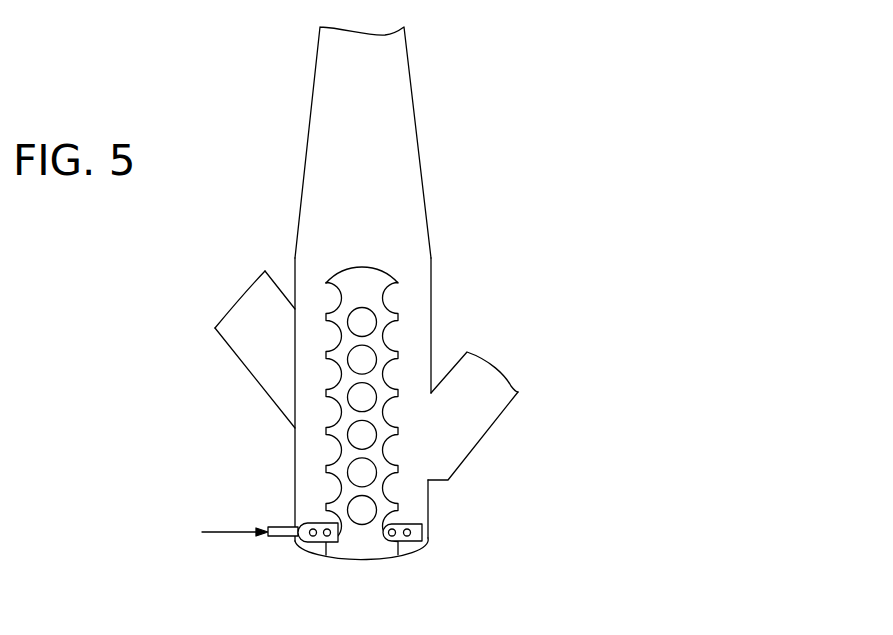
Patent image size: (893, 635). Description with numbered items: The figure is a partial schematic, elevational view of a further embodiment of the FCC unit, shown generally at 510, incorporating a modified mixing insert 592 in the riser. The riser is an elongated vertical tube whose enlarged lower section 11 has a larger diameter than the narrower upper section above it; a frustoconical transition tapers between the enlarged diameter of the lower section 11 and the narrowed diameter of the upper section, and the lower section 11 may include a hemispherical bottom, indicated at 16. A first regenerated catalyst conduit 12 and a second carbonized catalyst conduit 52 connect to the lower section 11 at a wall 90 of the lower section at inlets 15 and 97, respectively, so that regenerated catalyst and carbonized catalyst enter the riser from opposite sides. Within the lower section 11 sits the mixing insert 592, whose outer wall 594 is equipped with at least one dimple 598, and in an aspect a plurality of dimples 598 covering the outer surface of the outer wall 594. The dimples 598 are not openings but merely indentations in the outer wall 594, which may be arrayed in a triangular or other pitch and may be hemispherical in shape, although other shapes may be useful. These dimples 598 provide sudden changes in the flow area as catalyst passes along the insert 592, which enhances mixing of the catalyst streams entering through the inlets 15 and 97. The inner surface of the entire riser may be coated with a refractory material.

The dispensing assembly 510 is at (490, 128).
The enlarged lower section 11 is at (297, 288).
The base end of housing 16 is at (350, 552).
The first regenerated catalyst conduit 12 is at (238, 363).
The inlet 15 is at (290, 358).
The outer wall 594 is at (400, 393).
The dimple 598 is at (300, 425).
The wall 90 is at (295, 508).
The mixing insert 592 is at (413, 509).
The second carbonized catalyst conduit 52 is at (490, 427).
The inlet 97 is at (433, 443).